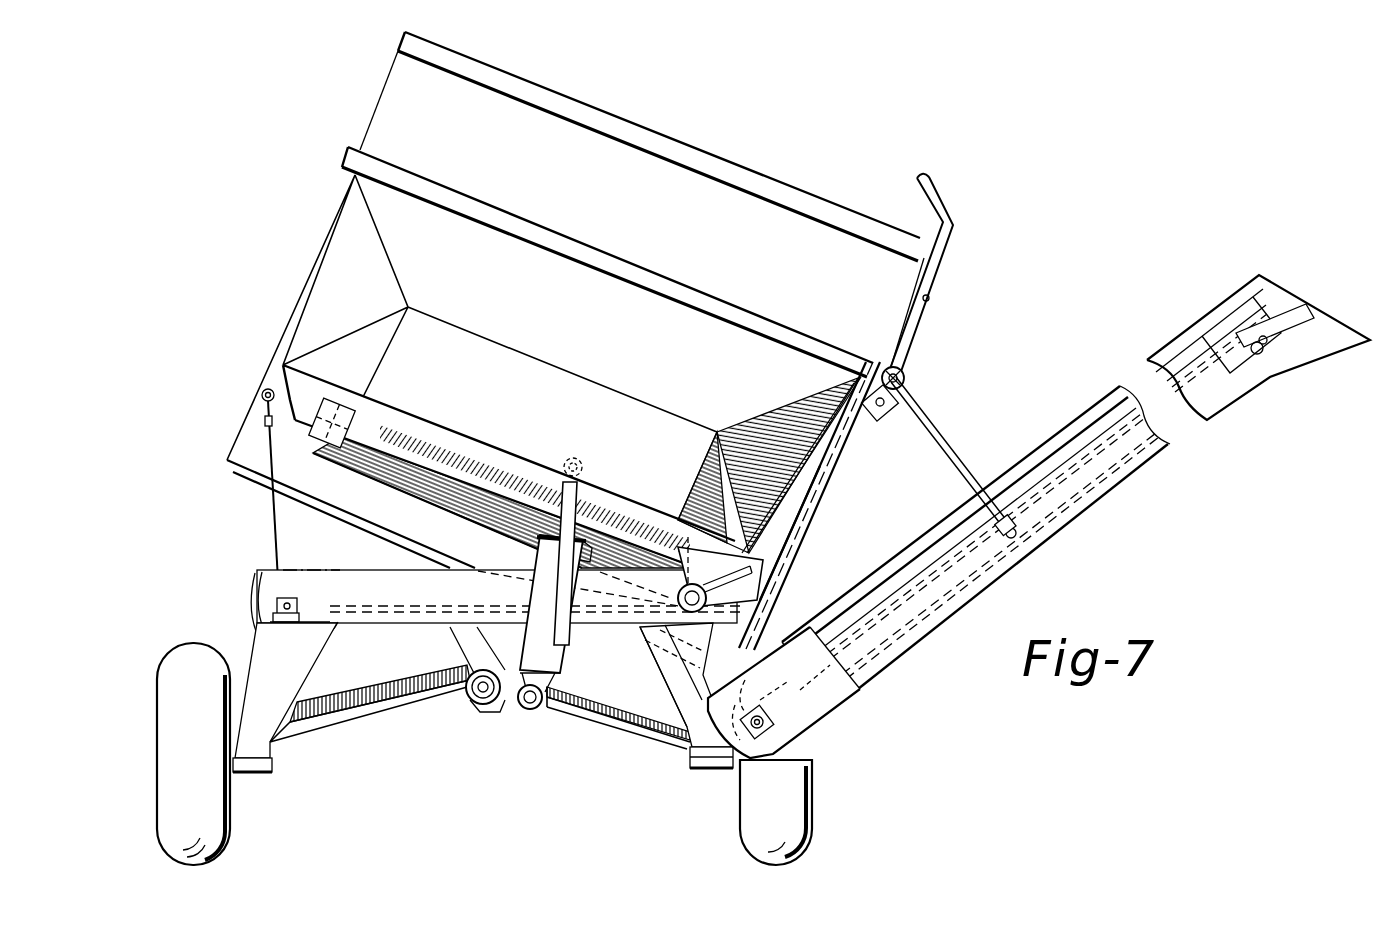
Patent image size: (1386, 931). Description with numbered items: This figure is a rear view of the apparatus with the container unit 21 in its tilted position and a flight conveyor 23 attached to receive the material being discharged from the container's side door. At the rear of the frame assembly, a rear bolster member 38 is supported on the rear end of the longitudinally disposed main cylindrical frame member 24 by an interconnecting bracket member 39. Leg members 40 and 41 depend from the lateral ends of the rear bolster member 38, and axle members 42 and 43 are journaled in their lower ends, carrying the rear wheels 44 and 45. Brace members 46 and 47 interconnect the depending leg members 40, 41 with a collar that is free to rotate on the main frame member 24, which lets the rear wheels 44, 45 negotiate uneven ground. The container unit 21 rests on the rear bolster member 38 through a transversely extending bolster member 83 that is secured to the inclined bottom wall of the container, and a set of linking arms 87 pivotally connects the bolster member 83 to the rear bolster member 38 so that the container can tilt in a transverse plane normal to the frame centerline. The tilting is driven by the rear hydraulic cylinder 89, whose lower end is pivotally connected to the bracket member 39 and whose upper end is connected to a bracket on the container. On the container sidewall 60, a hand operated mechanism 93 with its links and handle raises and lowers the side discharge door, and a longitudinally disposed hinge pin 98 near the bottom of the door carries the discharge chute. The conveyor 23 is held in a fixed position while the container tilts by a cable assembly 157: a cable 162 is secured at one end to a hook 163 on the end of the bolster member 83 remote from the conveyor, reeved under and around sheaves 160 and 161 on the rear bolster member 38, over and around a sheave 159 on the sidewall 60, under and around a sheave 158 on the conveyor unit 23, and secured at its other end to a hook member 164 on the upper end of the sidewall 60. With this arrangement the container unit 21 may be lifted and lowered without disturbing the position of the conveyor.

The container unit 21 is at (751, 165).
The flight conveyor 23 is at (1099, 525).
The main cylindrical frame member 24 is at (475, 705).
The rear bolster member 38 is at (355, 568).
The bracket member 39 is at (522, 708).
The leg member 40 is at (300, 672).
The leg member 41 is at (650, 657).
The axle member 42 is at (282, 768).
The axle member 43 is at (733, 774).
The rear wheel 44 is at (232, 816).
The rear wheel 45 is at (800, 797).
The brace member 46 is at (375, 722).
The brace member 47 is at (612, 727).
The sidewall 60 is at (833, 463).
The bolster member 83 is at (500, 468).
The linking arms 87 is at (747, 598).
The rear hydraulic cylinder 89 is at (528, 585).
The hand operated mechanism 93 is at (925, 357).
The hinge pin 98 is at (747, 657).
The cable assembly 157 is at (808, 488).
The sheave 158 is at (1000, 540).
The sheave 159 is at (880, 410).
The sheave 160 is at (713, 610).
The sheave 161 is at (290, 598).
The cable 162 is at (777, 523).
The hook 163 is at (262, 392).
The hook member 164 is at (906, 378).